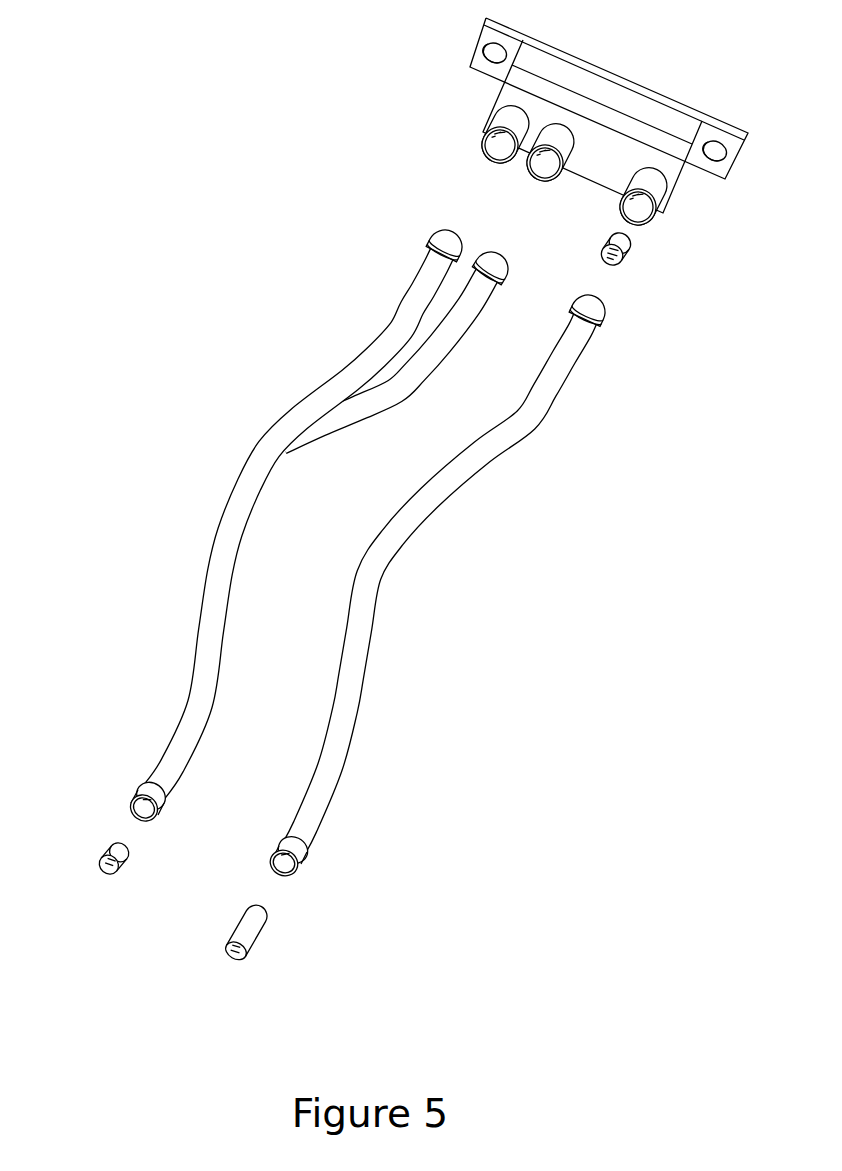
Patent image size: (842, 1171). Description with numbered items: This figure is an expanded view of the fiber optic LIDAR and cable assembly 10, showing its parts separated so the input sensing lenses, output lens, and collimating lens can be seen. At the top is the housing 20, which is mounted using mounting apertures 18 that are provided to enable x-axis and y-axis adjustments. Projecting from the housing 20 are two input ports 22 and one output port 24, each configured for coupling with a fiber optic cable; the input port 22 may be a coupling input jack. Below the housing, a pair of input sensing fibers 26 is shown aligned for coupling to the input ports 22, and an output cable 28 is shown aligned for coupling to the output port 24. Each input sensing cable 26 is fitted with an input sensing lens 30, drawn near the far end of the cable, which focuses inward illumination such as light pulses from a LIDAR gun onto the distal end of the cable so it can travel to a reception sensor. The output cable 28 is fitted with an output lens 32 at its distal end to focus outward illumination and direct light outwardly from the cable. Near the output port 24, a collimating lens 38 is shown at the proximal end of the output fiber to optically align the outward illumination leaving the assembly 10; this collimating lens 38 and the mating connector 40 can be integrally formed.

The fiber optic LIDAR and cable assembly 10 is at (282, 140).
The mounting apertures 18 is at (496, 53).
The housing 20 is at (607, 95).
The input port 22 is at (502, 146).
The output port 24 is at (641, 208).
The input sensing fibers 26 is at (388, 334).
The output cable 28 is at (538, 397).
The input sensing lens 30 is at (108, 864).
The output lens 32 is at (237, 955).
The collimating lens 38 is at (600, 257).
The mating connector 40 is at (632, 247).